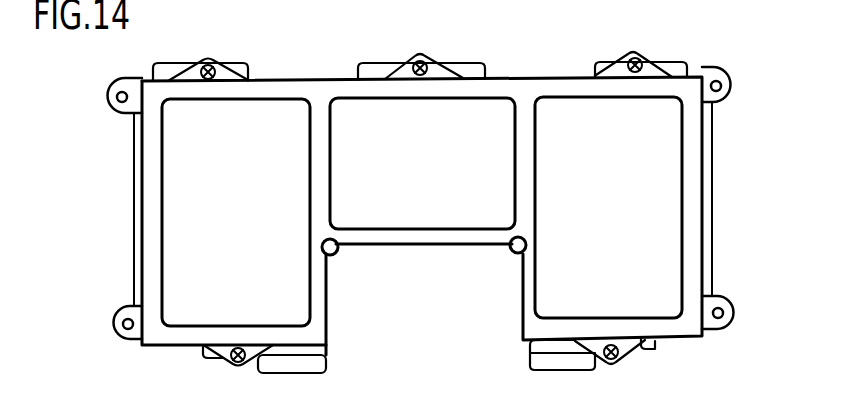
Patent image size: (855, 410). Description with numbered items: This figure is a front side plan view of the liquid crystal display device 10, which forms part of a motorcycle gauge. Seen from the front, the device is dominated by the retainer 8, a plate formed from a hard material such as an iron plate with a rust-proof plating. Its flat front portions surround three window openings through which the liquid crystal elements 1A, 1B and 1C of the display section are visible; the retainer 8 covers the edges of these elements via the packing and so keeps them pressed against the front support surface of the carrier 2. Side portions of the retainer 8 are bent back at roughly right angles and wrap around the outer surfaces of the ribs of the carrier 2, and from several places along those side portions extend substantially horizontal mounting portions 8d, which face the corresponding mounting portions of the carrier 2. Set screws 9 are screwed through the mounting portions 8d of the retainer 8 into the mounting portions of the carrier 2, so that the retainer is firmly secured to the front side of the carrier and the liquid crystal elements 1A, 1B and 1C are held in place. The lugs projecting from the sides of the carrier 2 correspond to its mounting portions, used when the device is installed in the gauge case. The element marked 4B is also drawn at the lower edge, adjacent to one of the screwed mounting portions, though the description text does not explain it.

The liquid crystal display device 10 is at (530, 58).
The retainer 8 is at (300, 88).
The mounting portions 8d is at (652, 72).
The set screws 9 is at (633, 55).
The carrier 2 is at (722, 67).
The liquid crystal element 1A is at (668, 154).
The liquid crystal element 1B is at (402, 209).
The liquid crystal element 1C is at (192, 199).
The bottom bracket 4B is at (545, 362).